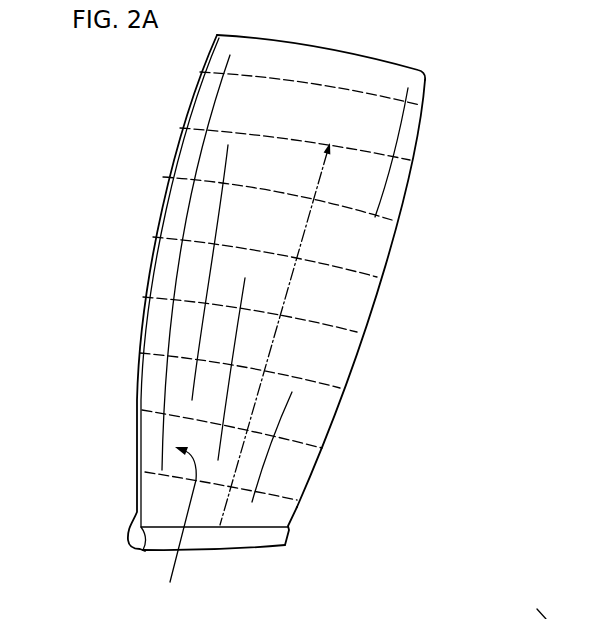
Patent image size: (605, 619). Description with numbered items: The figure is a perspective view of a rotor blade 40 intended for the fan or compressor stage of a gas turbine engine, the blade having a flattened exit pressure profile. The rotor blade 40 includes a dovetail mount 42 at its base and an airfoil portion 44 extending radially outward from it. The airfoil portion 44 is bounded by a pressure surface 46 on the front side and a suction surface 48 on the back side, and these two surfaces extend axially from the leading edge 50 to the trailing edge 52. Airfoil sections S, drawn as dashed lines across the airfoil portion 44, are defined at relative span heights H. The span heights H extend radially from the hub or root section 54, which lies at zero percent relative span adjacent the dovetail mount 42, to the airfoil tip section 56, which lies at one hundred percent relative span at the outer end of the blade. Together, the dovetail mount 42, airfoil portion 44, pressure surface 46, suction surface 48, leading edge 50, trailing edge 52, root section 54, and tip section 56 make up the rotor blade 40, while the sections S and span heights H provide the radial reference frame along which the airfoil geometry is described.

The rotor blade 40 is at (118, 122).
The dovetail mount 42 is at (227, 540).
The airfoil portion 44 is at (287, 231).
The pressure surface 46 is at (174, 527).
The suction surface 48 is at (132, 435).
The leading edge 50 is at (530, 603).
The trailing edge 52 is at (368, 307).
The hub or root section 54 is at (278, 515).
The airfoil tip section 56 is at (373, 55).
The airfoil sections S is at (285, 133).
The span heights H is at (275, 334).